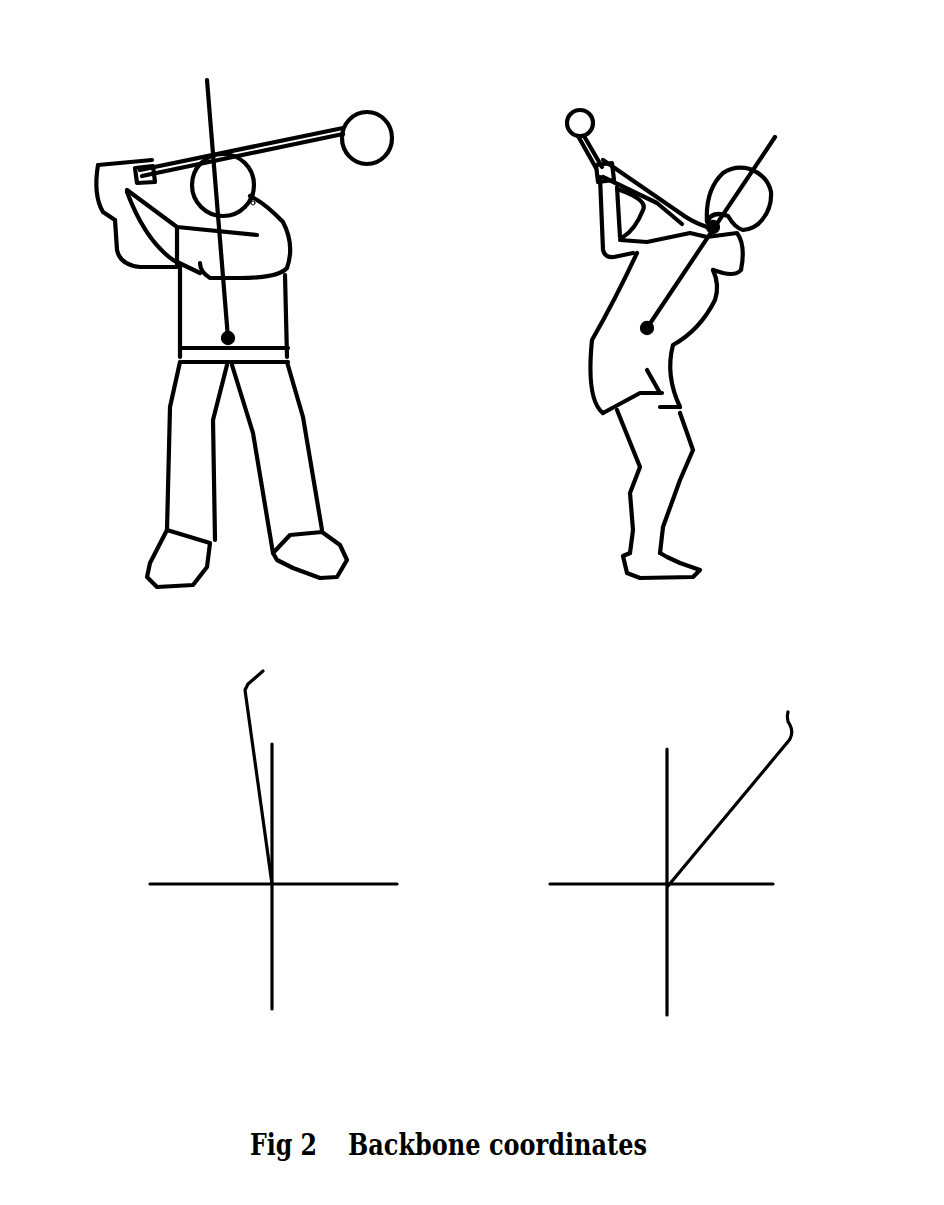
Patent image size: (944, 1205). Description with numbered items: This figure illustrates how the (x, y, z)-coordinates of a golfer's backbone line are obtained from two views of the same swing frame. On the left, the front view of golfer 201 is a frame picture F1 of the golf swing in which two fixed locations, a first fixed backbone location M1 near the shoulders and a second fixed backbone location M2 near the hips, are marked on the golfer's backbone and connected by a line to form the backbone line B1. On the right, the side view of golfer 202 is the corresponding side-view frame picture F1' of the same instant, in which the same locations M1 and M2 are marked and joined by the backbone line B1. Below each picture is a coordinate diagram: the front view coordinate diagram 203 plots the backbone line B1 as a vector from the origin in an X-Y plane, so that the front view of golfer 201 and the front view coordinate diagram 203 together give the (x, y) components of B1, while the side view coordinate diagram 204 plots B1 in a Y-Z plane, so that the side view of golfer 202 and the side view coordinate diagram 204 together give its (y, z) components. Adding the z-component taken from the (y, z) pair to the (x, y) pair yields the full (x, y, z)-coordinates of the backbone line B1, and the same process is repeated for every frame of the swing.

The front view of golfer 201 is at (157, 97).
The side view of golfer 202 is at (613, 108).
The front view coordinate diagram 203 is at (156, 744).
The side view coordinate diagram 204 is at (634, 720).
The backbone line B1 is at (212, 100).
The first fixed backbone location M1 is at (607, 237).
The second fixed backbone location M2 is at (645, 328).
The golf swing frame picture F1 is at (247, 588).
The side-view golf swing frame picture F1' is at (614, 597).